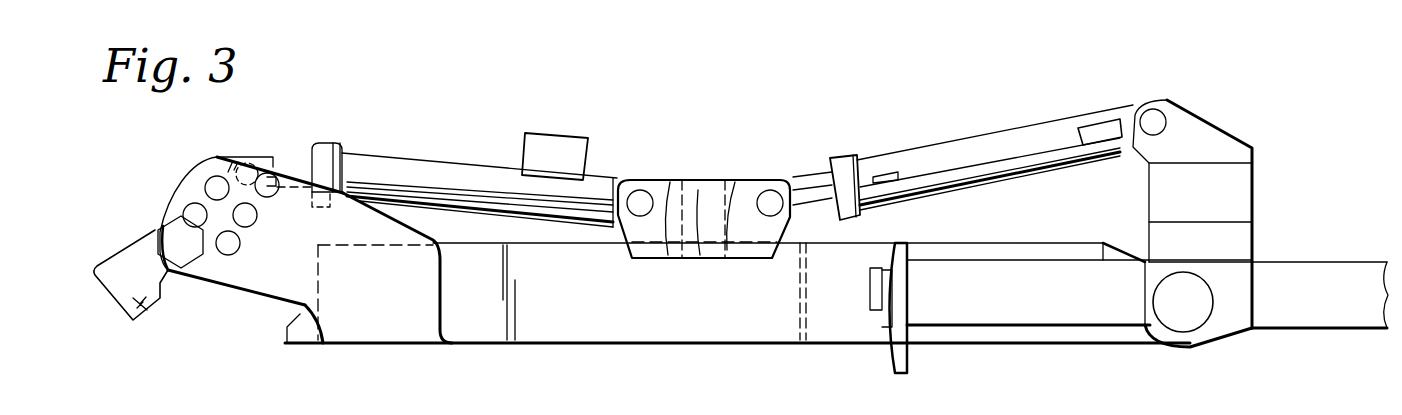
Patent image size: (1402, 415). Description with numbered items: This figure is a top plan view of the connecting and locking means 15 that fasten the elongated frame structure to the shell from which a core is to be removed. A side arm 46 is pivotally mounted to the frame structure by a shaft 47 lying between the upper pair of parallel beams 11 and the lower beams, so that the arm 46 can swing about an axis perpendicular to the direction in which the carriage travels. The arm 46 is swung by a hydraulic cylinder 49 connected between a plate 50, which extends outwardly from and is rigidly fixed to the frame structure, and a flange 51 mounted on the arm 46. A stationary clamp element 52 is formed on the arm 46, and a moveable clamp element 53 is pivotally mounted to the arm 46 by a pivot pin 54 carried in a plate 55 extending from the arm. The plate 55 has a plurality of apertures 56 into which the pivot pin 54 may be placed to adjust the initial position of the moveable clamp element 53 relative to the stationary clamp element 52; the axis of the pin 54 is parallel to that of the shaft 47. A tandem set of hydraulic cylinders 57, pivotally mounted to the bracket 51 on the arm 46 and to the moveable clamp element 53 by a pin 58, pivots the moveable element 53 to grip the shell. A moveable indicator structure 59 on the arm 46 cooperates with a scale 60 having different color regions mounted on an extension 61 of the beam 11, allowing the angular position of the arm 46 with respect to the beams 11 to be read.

The first pair of parallel beams 11 is at (1320, 320).
The connecting and locking means 15 is at (690, 55).
The side arms 46 is at (700, 327).
The shaft 47 is at (1198, 288).
The hydraulic cylinder 49 is at (972, 143).
The plate 50 is at (1202, 138).
The flange 51 is at (730, 160).
The stationary clamp element 52 is at (287, 340).
The moveable clamp element 53 is at (117, 258).
The pivot pin 54 is at (167, 233).
The plate 55 is at (219, 265).
The apertures 56 is at (197, 203).
The tandem set of hydraulic cylinders 57 is at (424, 150).
The pin 58 is at (250, 163).
The moveable indicator structure 59 is at (873, 293).
The scale 60 is at (877, 320).
The extension 61 is at (1018, 308).